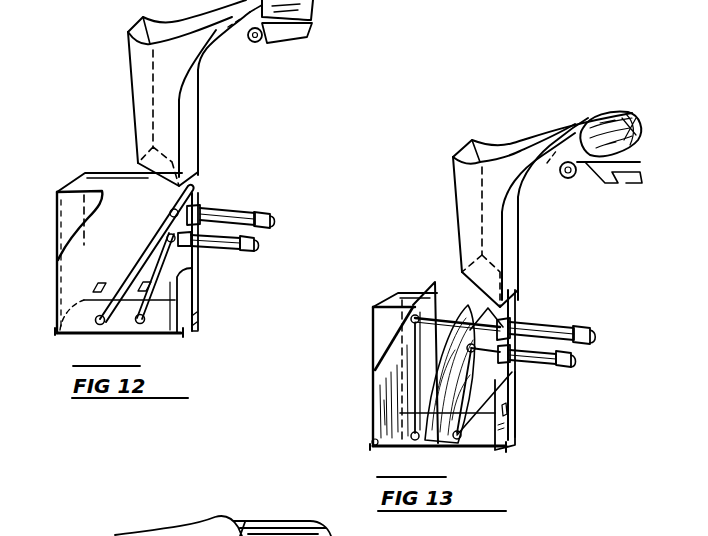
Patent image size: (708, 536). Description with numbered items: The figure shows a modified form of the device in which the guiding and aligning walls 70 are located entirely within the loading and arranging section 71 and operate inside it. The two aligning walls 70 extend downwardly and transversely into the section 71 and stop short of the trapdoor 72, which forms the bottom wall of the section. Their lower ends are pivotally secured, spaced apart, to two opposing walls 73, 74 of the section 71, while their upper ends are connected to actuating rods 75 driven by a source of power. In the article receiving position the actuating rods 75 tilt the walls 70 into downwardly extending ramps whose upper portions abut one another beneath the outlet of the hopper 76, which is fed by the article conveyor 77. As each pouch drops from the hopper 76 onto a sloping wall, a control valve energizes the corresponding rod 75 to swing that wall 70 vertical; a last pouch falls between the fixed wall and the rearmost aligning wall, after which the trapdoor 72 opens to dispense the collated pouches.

In FIG. 12, the guiding and aligning walls 70 is at (93, 329).
In FIG. 13, the guiding and aligning walls 70 is at (475, 444).
In FIG. 12, the loading and arranging section 71 is at (110, 238).
In FIG. 12, the trapdoor 72 is at (155, 332).
In FIG. 13, the trapdoor 72 is at (384, 451).
In FIG. 12, the opposing wall 73 is at (110, 174).
In FIG. 13, the opposing wall 73 is at (415, 293).
In FIG. 12, the opposing wall 74 is at (78, 218).
In FIG. 13, the opposing wall 74 is at (392, 328).
In FIG. 12, the actuating rods 75 is at (233, 217).
In FIG. 13, the actuating rods 75 is at (547, 325).
In FIG. 12, the hopper 76 is at (177, 82).
In FIG. 13, the hopper 76 is at (490, 226).
In FIG. 12, the article conveyor 77 is at (299, 32).
In FIG. 13, the article conveyor 77 is at (595, 177).